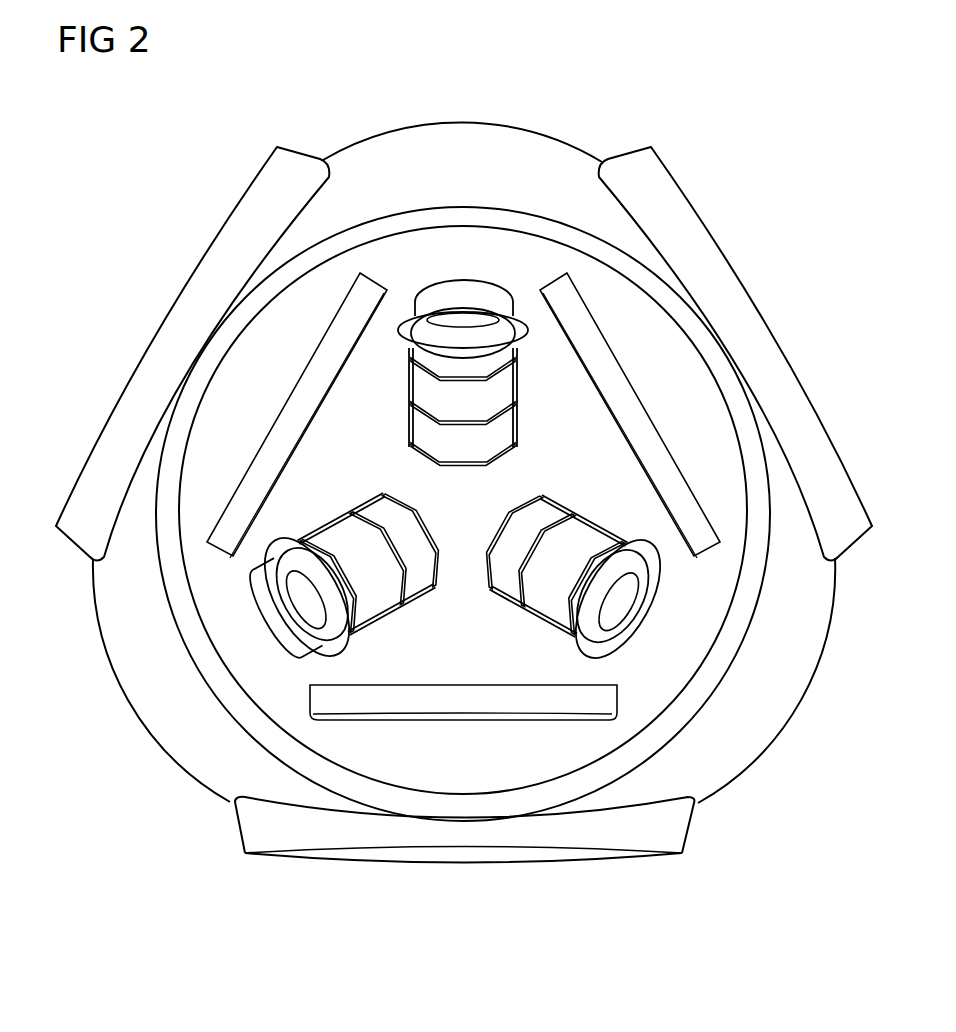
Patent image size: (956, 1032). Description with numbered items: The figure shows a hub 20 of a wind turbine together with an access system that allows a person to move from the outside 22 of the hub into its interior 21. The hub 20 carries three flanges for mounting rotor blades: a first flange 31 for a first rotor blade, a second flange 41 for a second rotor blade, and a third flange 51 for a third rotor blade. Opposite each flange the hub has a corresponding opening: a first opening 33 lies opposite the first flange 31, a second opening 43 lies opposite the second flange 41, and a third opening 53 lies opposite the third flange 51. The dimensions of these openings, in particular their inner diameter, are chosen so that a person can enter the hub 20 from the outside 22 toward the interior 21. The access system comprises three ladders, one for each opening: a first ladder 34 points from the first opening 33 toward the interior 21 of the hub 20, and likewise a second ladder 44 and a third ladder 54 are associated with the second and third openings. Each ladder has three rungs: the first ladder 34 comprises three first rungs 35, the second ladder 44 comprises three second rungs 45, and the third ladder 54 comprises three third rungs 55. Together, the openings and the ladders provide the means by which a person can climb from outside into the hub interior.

The hub 20 is at (603, 92).
The interior 21 is at (553, 668).
The outside 22 is at (155, 790).
The first flange 31 is at (458, 705).
The first opening 33 is at (463, 320).
The first ladder 34 is at (396, 406).
The first rungs 35 is at (497, 375).
The second flange 41 is at (637, 417).
The second opening 43 is at (300, 598).
The second ladder 44 is at (400, 628).
The second rungs 45 is at (330, 548).
The third flange 51 is at (300, 408).
The third opening 53 is at (628, 606).
The third ladder 54 is at (596, 502).
The third rungs 55 is at (560, 607).